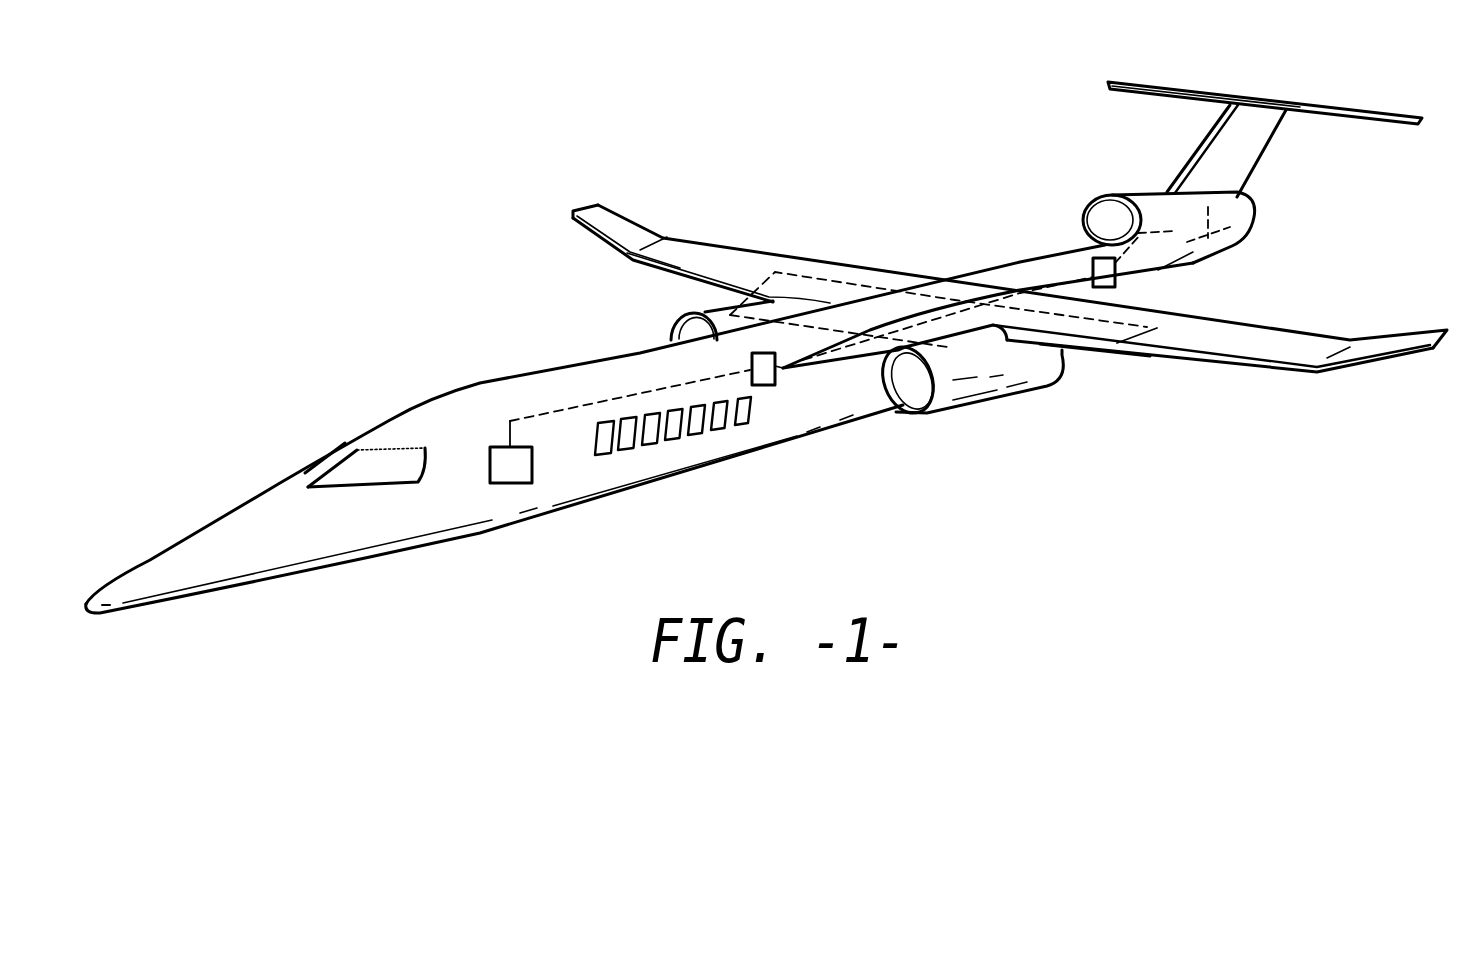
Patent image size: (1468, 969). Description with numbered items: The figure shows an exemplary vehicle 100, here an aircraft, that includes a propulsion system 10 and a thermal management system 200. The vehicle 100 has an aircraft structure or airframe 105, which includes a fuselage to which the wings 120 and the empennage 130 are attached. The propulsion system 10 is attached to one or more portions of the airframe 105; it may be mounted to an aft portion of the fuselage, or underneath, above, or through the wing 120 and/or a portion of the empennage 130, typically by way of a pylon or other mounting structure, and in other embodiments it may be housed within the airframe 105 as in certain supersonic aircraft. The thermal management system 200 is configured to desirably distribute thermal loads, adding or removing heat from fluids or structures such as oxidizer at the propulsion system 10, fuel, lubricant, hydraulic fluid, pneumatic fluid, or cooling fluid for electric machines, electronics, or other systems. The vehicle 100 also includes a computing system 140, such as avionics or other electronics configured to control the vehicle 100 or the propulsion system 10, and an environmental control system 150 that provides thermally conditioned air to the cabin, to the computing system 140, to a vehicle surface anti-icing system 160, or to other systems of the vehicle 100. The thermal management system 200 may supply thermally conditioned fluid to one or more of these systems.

The vehicle 100 is at (766, 347).
The airframe 105 is at (571, 320).
The wings 120 is at (763, 267).
The empennage 130 is at (1286, 158).
The propulsion system 10 is at (712, 317).
The computing system 140 is at (532, 466).
The environmental control system 150 is at (775, 380).
The vehicle surface anti-icing system 160 is at (1105, 352).
The thermal management system 200 is at (1092, 272).